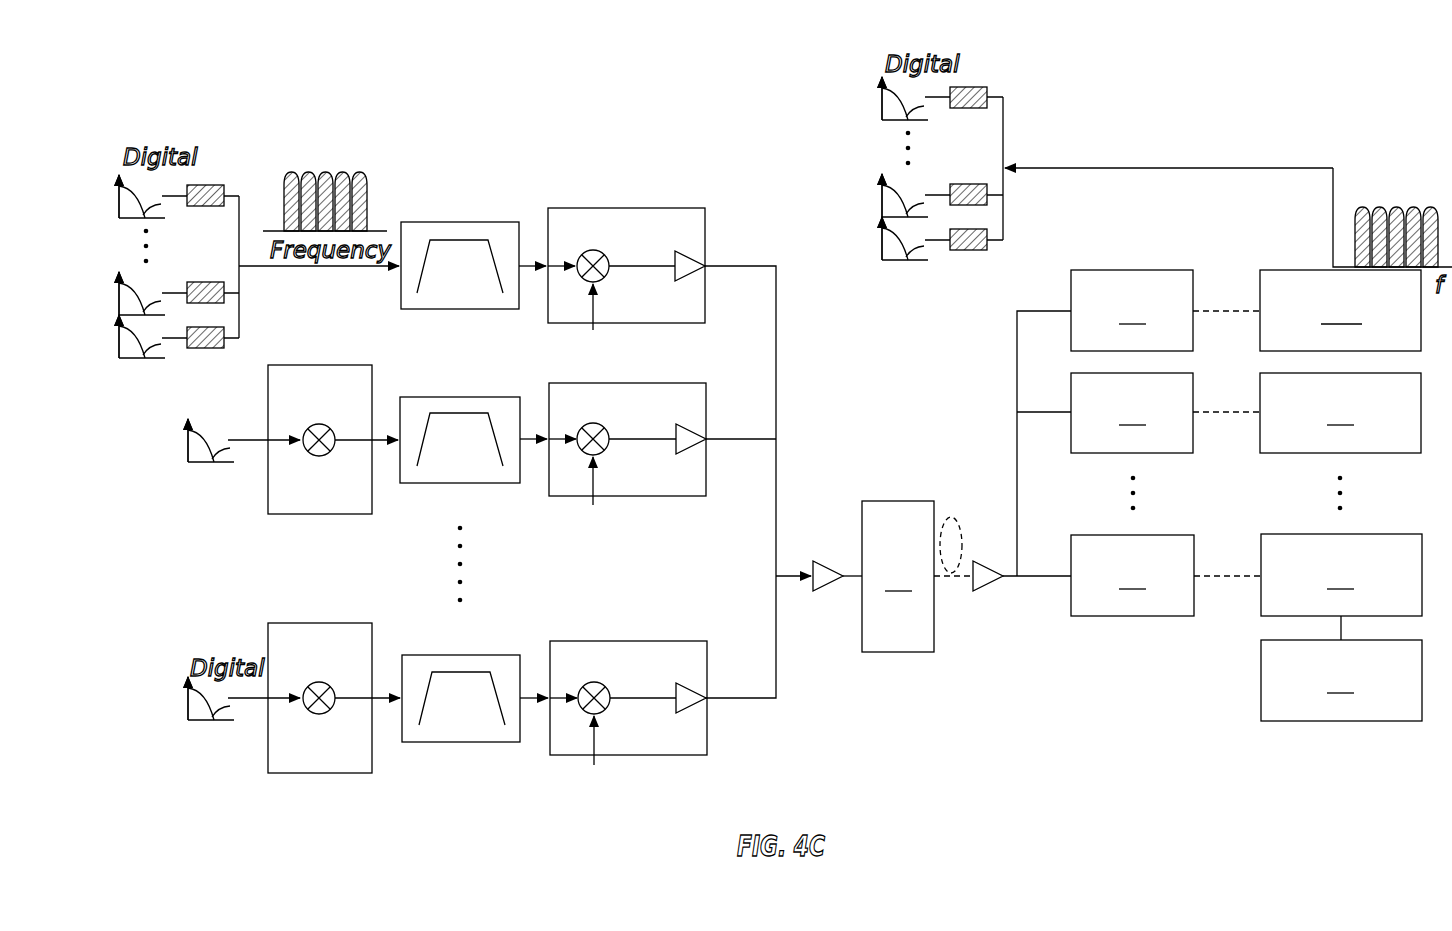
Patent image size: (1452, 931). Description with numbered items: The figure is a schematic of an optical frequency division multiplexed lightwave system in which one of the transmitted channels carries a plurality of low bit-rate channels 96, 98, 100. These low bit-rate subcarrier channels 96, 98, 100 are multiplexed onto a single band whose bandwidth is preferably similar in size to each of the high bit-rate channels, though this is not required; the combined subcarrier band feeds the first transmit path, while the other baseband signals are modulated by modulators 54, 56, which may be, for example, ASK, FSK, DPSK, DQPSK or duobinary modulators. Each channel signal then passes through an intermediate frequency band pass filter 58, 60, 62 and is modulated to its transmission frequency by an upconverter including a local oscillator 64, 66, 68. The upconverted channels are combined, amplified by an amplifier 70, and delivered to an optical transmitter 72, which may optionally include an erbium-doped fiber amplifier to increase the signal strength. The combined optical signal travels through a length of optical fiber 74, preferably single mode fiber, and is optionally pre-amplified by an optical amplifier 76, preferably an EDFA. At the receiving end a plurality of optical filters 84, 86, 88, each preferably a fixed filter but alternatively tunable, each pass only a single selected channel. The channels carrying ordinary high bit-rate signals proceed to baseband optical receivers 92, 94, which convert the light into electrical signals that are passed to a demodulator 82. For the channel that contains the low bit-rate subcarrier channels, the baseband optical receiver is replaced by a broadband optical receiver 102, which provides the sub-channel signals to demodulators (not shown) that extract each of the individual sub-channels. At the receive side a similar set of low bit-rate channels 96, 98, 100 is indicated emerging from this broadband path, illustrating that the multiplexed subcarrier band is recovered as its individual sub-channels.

The modulator 54 is at (294, 365).
The modulator 56 is at (294, 623).
The intermediate frequency band pass filter 58 is at (420, 222).
The intermediate frequency band pass filter 60 is at (424, 397).
The intermediate frequency band pass filter 62 is at (426, 655).
The upconverter including local oscillator 64 is at (681, 208).
The upconverter including local oscillator 66 is at (682, 383).
The upconverter including local oscillator 68 is at (684, 641).
The amplifier 70 is at (815, 560).
The optical transmitter 72 is at (898, 576).
The optical fiber 74 is at (955, 518).
The optical amplifier 76 is at (988, 595).
The demodulator 82 is at (1341, 680).
The optical filter 84 is at (1132, 310).
The optical filter 86 is at (1132, 413).
The optical filter 88 is at (1132, 575).
The baseband optical receiver 92 is at (1340, 413).
The baseband optical receiver 94 is at (1341, 575).
The low bit-rate channel 96 is at (200, 186).
The low bit-rate channel 98 is at (212, 282).
The low bit-rate channel 100 is at (196, 348).
The broadband optical receiver 102 is at (1340, 310).